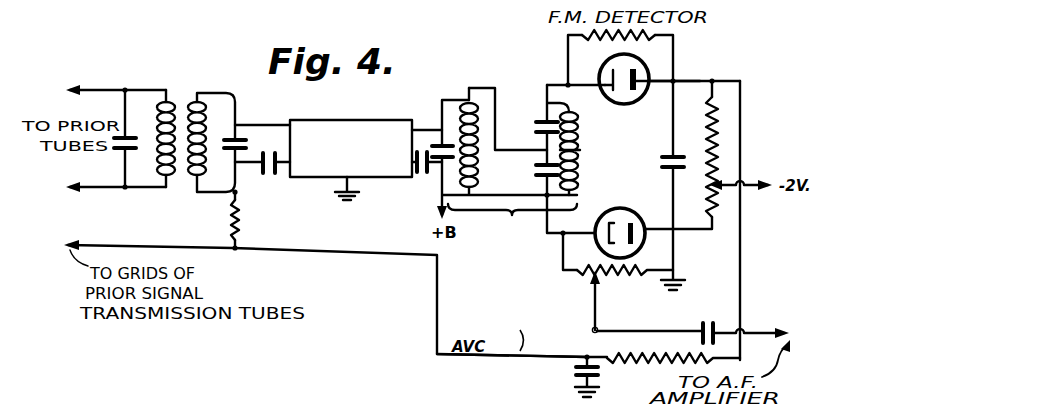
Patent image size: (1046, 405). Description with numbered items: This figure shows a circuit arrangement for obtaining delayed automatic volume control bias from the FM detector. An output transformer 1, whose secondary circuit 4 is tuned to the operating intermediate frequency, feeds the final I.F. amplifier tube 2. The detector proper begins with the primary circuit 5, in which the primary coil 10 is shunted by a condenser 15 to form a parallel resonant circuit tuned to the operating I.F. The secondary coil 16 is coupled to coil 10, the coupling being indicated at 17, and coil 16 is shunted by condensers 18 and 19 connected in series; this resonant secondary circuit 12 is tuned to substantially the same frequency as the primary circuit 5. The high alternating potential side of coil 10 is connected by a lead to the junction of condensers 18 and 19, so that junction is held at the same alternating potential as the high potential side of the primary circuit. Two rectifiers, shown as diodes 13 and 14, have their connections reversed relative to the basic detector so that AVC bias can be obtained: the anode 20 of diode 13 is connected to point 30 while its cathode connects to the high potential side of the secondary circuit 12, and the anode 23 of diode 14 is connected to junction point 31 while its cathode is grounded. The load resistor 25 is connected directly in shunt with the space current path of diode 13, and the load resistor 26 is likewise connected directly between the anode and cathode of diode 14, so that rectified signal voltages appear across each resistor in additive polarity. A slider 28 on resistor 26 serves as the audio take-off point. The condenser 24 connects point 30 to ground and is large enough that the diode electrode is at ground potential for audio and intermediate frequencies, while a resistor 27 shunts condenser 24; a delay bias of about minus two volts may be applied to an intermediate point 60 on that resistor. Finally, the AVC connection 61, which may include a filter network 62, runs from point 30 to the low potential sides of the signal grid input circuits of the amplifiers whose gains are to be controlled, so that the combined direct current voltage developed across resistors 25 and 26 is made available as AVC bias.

The output transformer 1 is at (188, 98).
The secondary circuit of output transformer 4 is at (212, 100).
The final I.F. amplifier tube 2 is at (364, 121).
The primary circuit 5 is at (461, 94).
The primary coil 10 is at (480, 176).
The condenser 15 is at (441, 168).
The coupling 17 is at (512, 220).
The condenser 18 is at (527, 122).
The condenser 19 is at (534, 163).
The resonant secondary circuit 12 is at (578, 127).
The secondary coil 16 is at (580, 151).
The diode 13 is at (624, 94).
The anode of diode 13 20 is at (640, 88).
The diode 14 is at (634, 213).
The anode of diode 14 23 is at (600, 214).
The load resistor 25 is at (652, 42).
The point 30 is at (678, 80).
The condenser 24 is at (680, 152).
The resistor 27 is at (718, 140).
The intermediate point on resistor 27 60 is at (708, 185).
The junction point 31 is at (560, 238).
The load resistor 26 is at (584, 272).
The slider 28 is at (601, 305).
The AVC connection 61 is at (518, 352).
The filter network 62 is at (627, 352).